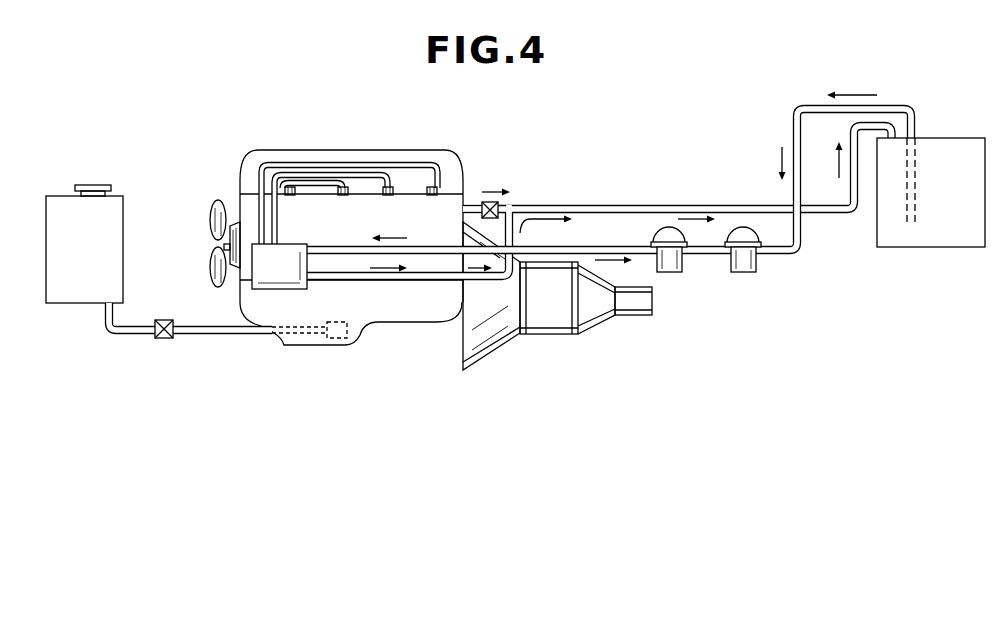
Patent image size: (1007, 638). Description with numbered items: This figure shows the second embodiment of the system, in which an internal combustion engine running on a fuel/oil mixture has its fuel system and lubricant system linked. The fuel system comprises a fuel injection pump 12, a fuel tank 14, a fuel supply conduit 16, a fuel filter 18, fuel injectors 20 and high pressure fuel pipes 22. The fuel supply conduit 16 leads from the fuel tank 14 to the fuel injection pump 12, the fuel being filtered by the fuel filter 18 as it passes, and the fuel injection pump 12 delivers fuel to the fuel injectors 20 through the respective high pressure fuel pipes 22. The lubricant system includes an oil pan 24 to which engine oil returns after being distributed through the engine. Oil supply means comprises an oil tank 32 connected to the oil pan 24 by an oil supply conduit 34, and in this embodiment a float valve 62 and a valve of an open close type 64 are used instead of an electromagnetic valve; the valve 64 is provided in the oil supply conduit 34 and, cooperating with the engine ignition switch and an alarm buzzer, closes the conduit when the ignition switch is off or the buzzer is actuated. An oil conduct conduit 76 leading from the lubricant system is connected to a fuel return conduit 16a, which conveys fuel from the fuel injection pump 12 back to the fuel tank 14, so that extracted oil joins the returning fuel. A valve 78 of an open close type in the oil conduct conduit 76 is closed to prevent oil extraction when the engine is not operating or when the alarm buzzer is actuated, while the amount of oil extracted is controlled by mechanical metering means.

The fuel injection pump 12 is at (265, 265).
The fuel tank 14 is at (938, 247).
The fuel supply conduit 16 is at (712, 253).
The fuel return conduit 16a is at (422, 280).
The fuel filter 18 is at (672, 272).
The fuel injectors 20 is at (298, 187).
The high pressure fuel pipes 22 is at (277, 167).
The oil pan 24 is at (287, 345).
The oil tank 32 is at (62, 196).
The oil supply conduit 34 is at (122, 335).
The float valve 62 is at (338, 338).
The open close type valve 64 is at (165, 338).
The oil conduct conduit 76 is at (473, 202).
The open close type valve 78 is at (504, 204).